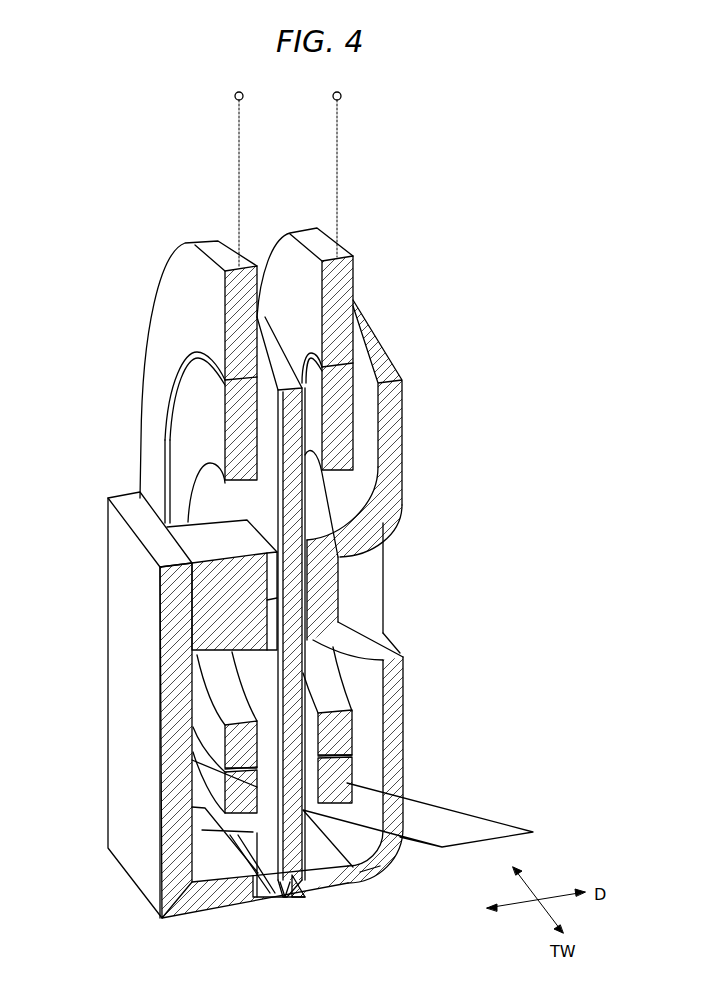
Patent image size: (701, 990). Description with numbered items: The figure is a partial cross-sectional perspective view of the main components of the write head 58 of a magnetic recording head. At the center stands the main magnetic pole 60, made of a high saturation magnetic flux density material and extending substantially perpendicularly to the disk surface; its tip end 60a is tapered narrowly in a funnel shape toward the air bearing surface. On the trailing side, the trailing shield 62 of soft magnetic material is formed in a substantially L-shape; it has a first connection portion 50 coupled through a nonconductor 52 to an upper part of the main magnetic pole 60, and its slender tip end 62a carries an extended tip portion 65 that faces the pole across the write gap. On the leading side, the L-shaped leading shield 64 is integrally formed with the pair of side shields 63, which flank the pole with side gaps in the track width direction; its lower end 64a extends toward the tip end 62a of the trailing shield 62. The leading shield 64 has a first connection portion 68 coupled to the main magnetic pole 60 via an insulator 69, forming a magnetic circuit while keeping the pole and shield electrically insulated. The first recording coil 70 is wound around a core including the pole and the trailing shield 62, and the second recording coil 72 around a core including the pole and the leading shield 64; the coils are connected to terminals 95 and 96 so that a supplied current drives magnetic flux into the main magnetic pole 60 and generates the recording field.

The first connection portion 50 is at (332, 592).
The nonconductor 52 is at (307, 565).
The write head 58 is at (433, 322).
The main magnetic pole 60 is at (298, 840).
The tip end of the main magnetic pole 60a is at (287, 898).
The trailing shield 62 is at (405, 727).
The tip end of the trailing shield 62a is at (364, 886).
The side shield 63 is at (245, 848).
The leading shield 64 is at (113, 745).
The lower end of the leading shield 64a is at (253, 898).
The extended tip portion 65 is at (297, 899).
The first connection portion of the leading shield 68 is at (202, 601).
The insulator 69 is at (257, 613).
The first recording coil 70 is at (355, 273).
The second recording coil 72 is at (163, 281).
The terminal 95 is at (342, 96).
The terminal 96 is at (234, 96).